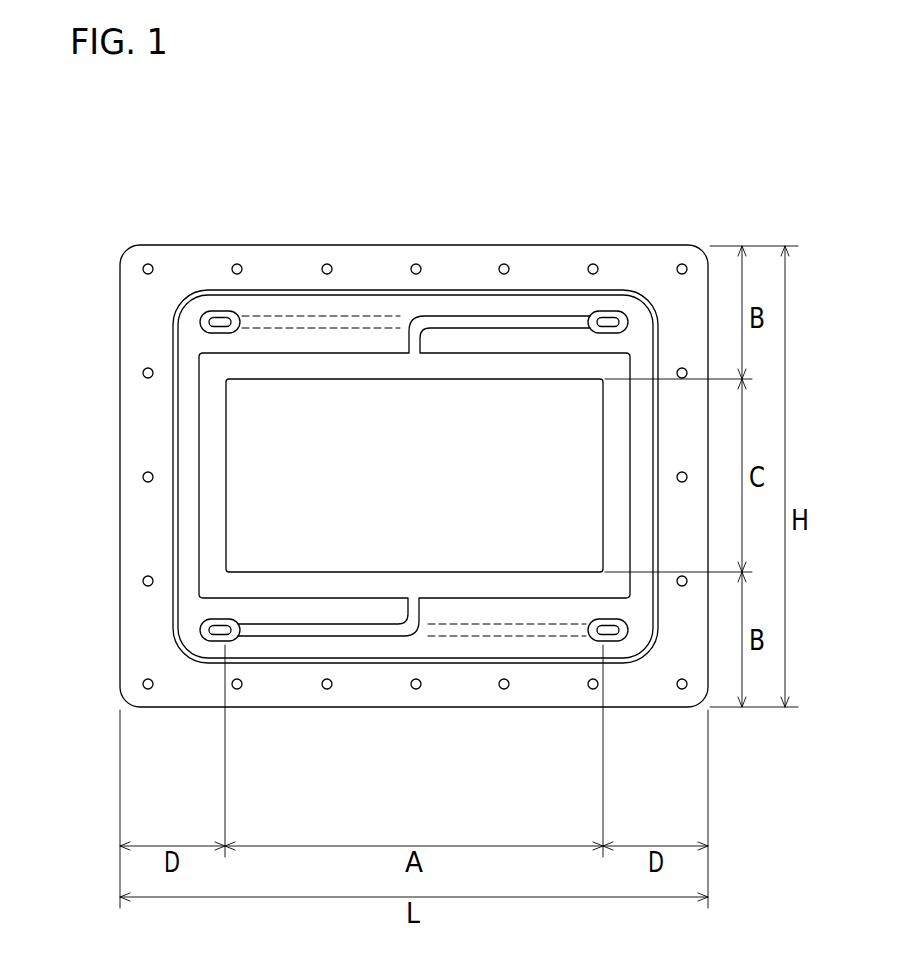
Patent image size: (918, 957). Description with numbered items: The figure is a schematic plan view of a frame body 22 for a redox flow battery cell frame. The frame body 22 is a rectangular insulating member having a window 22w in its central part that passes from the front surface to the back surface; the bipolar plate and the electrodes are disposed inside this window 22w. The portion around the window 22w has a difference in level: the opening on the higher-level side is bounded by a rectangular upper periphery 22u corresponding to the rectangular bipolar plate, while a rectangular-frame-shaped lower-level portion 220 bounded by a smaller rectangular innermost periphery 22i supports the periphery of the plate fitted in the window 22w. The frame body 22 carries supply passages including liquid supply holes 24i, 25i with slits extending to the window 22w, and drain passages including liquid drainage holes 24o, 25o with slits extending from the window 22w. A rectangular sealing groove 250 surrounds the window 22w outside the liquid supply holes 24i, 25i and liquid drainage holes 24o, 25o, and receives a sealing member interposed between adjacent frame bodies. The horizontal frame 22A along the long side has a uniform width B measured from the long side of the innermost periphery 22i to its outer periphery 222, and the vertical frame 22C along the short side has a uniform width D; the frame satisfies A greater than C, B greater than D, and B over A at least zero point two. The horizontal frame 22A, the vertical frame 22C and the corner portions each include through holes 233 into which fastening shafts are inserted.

The frame body 22 is at (657, 247).
The horizontal frame 22A is at (356, 249).
The outer periphery 222 is at (417, 246).
The through holes 233 is at (502, 264).
The sealing groove 250 is at (537, 289).
The lower-level portion 220 is at (280, 370).
The liquid drainage hole 24o is at (218, 310).
The liquid drainage hole 25o is at (609, 310).
The liquid supply hole 25i is at (212, 643).
The liquid supply hole 24i is at (609, 642).
The innermost periphery 22i is at (230, 435).
The upper periphery 22u is at (200, 498).
The vertical frame 22C is at (150, 538).
The window 22w is at (239, 547).